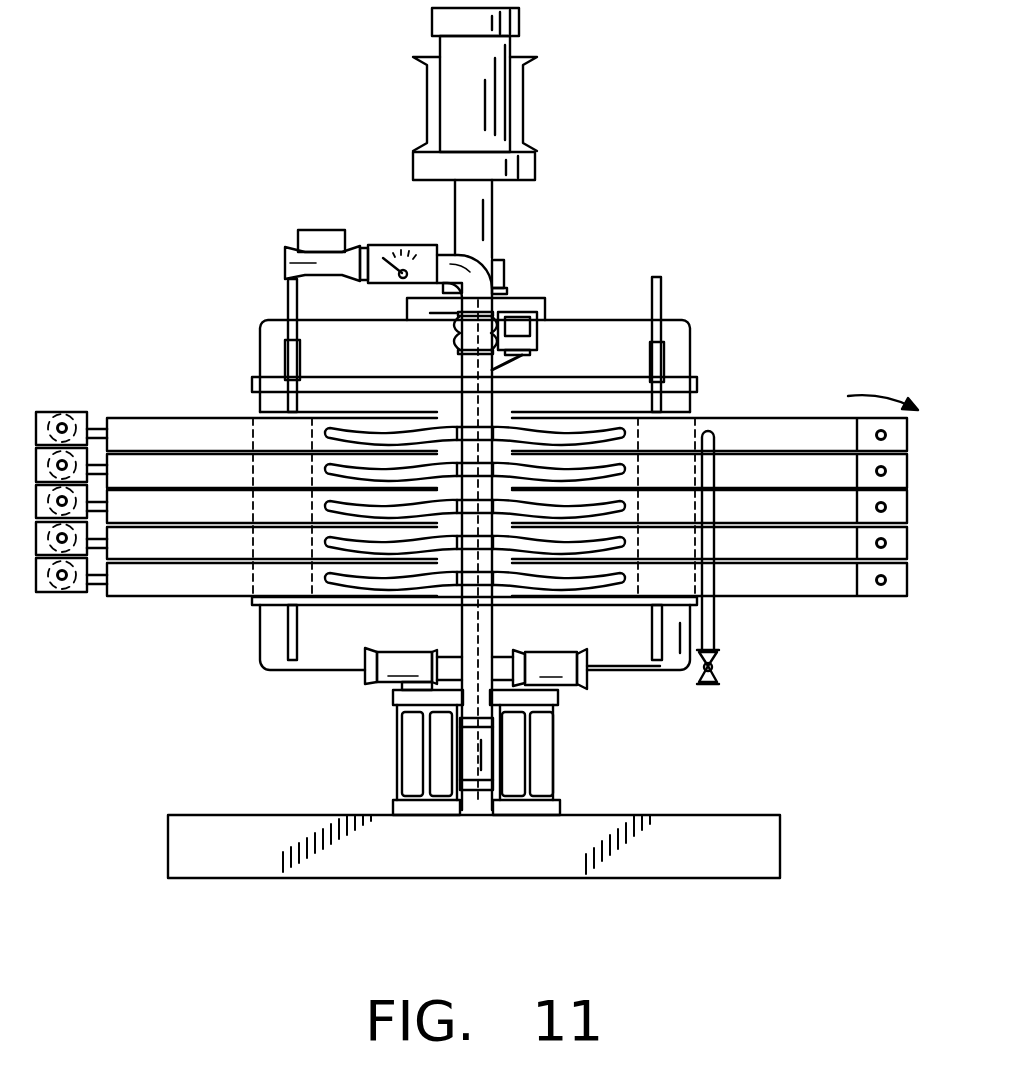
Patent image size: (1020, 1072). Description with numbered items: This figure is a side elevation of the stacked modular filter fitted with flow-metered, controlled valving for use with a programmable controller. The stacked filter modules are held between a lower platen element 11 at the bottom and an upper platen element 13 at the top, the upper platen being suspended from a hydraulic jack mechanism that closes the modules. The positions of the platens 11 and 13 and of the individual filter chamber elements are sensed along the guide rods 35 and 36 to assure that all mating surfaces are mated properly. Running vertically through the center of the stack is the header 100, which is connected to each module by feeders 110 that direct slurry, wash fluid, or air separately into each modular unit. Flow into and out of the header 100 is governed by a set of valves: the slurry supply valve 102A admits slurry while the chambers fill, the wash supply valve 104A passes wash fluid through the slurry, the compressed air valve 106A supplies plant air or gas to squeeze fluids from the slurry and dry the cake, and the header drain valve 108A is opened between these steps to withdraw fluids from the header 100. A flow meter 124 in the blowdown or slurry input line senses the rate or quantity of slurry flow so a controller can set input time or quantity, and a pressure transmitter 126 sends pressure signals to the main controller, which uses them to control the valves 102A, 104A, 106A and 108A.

The lower platen element 11 is at (354, 639).
The upper platen element 13 is at (372, 368).
The guide rod 35 is at (662, 291).
The guide rod 36 is at (288, 296).
The header 100 is at (470, 405).
The slurry supply valve 102A is at (590, 668).
The wash supply valve 104A is at (365, 660).
The compressed air valve 106A is at (285, 255).
The header drain valve 108A is at (470, 752).
The feeders 110 is at (600, 447).
The flow meter 124 is at (382, 244).
The pressure transmitter 126 is at (524, 338).